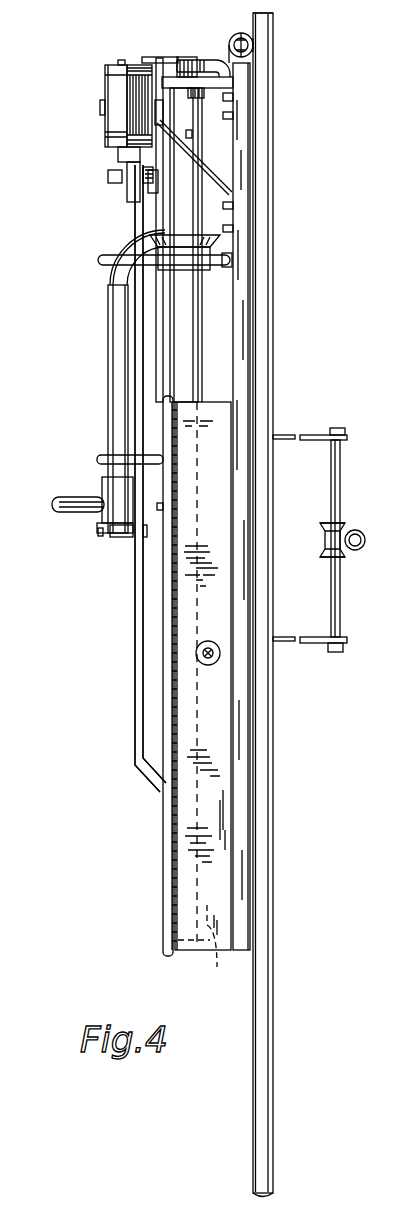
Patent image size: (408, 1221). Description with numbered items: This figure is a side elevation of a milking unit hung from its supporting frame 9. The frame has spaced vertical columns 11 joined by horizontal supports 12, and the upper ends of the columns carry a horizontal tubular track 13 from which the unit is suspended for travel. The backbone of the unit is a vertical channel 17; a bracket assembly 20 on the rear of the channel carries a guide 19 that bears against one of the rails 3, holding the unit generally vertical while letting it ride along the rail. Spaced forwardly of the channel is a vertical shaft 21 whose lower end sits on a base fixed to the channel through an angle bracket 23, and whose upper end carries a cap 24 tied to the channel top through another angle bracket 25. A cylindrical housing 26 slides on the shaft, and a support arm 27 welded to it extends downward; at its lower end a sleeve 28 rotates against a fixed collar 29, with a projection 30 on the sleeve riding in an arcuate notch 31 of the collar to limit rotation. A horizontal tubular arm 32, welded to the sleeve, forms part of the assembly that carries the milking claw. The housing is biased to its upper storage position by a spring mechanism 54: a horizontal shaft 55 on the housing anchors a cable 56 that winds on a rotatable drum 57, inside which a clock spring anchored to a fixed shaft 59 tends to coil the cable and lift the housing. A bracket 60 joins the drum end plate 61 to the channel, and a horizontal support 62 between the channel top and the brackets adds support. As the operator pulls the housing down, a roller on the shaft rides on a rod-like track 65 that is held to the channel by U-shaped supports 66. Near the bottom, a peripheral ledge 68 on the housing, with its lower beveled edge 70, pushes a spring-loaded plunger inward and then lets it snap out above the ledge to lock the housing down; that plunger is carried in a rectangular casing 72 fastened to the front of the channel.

The rail 3 is at (357, 552).
The supporting frame 9 is at (278, 94).
The vertical column 11 is at (276, 22).
The horizontal support 12 is at (267, 500).
The horizontal tubular track 13 is at (247, 44).
The vertical channel 17 is at (247, 360).
The guide 19 is at (330, 523).
The bracket assembly 20 is at (315, 433).
The vertical shaft 21 is at (195, 328).
The angle bracket 23 is at (220, 949).
The cap 24 is at (188, 58).
The angle bracket 25 is at (212, 62).
The cylindrical housing 26 is at (212, 213).
The support arm 27 is at (108, 287).
The sleeve 28 is at (108, 485).
The fixed collar 29 is at (122, 535).
The projection 30 is at (98, 523).
The arcuate notch 31 is at (98, 533).
The horizontal tubular arm 32 is at (55, 507).
The spring mechanism 54 is at (100, 60).
The horizontal shaft 55 is at (158, 177).
The cable 56 is at (127, 80).
The rotatable drum 57 is at (122, 62).
The fixed shaft 59 is at (97, 108).
The bracket 60 is at (212, 172).
The end plate 61 is at (190, 135).
The horizontal support 62 is at (190, 82).
The rod-like track 65 is at (138, 328).
The U-shaped support 66 is at (102, 263).
The peripheral ledge 68 is at (130, 232).
The lower beveled edge 70 is at (217, 240).
The rectangular casing 72 is at (207, 803).